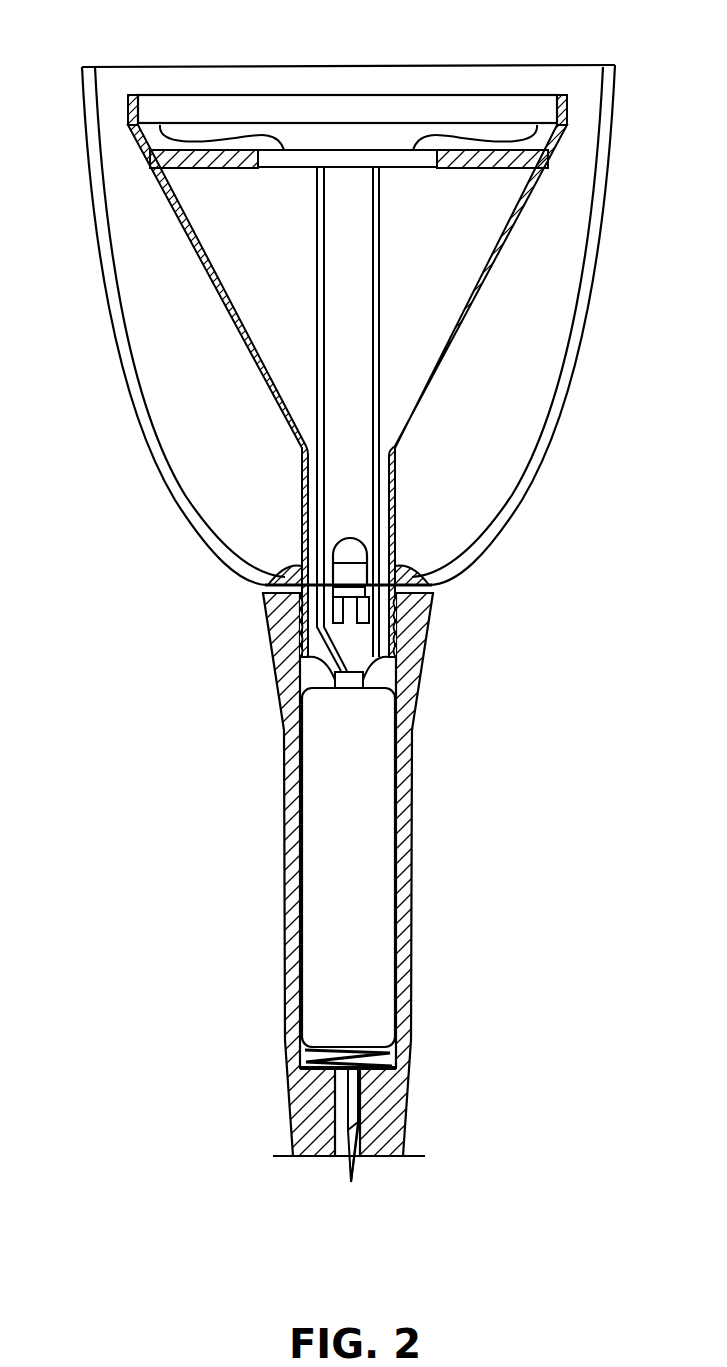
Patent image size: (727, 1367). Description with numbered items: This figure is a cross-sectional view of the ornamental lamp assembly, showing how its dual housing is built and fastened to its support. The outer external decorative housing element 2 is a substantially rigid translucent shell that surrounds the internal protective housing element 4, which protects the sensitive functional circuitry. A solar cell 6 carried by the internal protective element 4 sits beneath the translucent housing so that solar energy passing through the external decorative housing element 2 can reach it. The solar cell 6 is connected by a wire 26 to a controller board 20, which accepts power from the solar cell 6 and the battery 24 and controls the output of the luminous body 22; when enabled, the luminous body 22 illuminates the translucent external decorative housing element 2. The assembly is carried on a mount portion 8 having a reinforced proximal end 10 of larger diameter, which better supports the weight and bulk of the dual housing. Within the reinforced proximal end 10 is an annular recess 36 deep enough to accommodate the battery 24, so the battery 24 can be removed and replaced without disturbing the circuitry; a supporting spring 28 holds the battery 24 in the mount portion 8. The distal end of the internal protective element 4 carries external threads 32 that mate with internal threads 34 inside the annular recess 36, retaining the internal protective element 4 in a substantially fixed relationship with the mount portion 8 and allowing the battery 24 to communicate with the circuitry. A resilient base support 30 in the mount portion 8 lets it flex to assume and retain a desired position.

The external decorative housing element 2 is at (613, 78).
The internal protective housing element 4 is at (136, 97).
The solar cell 6 is at (398, 100).
The mount portion 8 is at (432, 628).
The reinforced proximal end 10 is at (283, 636).
The controller board 20 is at (302, 157).
The luminous body 22 is at (348, 545).
The battery 24 is at (322, 883).
The wire 26 is at (143, 147).
The supporting spring 28 is at (335, 1051).
The resilient base support 30 is at (347, 1100).
The external threads 32 is at (282, 572).
The internal threads 34 is at (300, 660).
The annular recess 36 is at (312, 674).